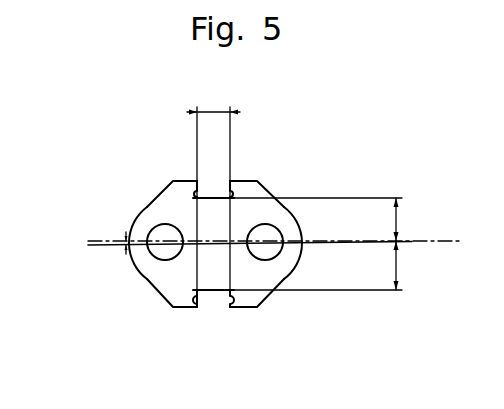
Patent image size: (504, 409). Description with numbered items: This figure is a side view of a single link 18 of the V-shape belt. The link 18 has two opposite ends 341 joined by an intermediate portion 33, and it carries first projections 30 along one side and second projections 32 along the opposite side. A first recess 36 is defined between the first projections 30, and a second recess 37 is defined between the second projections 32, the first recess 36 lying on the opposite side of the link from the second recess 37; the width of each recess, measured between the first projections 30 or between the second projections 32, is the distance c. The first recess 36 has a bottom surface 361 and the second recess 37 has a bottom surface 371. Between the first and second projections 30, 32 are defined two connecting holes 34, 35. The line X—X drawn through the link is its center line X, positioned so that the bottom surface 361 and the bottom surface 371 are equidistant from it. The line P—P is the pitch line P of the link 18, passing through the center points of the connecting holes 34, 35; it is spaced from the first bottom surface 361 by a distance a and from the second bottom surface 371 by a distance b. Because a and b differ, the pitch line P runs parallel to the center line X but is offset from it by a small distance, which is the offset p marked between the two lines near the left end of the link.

The link 18 is at (227, 246).
The first projections 30 is at (185, 192).
The second projections 32 is at (184, 311).
The intermediate portion 33 is at (222, 284).
The connecting hole 34 is at (158, 226).
The connecting hole 35 is at (262, 221).
The first recess 36 is at (213, 163).
The second recess 37 is at (210, 288).
The opposite ends 341 is at (287, 222).
The bottom surface 361 is at (207, 197).
The bottom surface 371 is at (220, 281).
The distance c is at (213, 100).
The distance a is at (318, 219).
The distance b is at (318, 265).
The center line X is at (271, 244).
The pitch line P is at (403, 240).
The offset p is at (124, 240).